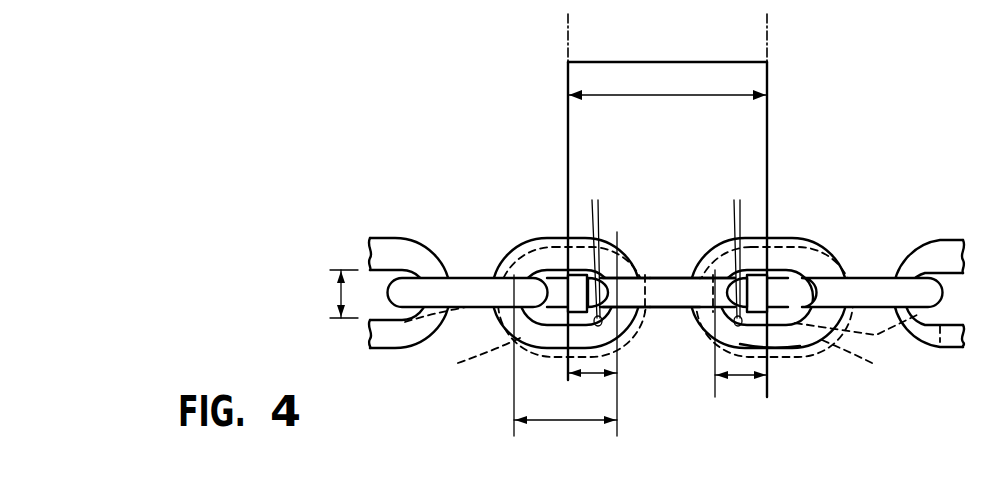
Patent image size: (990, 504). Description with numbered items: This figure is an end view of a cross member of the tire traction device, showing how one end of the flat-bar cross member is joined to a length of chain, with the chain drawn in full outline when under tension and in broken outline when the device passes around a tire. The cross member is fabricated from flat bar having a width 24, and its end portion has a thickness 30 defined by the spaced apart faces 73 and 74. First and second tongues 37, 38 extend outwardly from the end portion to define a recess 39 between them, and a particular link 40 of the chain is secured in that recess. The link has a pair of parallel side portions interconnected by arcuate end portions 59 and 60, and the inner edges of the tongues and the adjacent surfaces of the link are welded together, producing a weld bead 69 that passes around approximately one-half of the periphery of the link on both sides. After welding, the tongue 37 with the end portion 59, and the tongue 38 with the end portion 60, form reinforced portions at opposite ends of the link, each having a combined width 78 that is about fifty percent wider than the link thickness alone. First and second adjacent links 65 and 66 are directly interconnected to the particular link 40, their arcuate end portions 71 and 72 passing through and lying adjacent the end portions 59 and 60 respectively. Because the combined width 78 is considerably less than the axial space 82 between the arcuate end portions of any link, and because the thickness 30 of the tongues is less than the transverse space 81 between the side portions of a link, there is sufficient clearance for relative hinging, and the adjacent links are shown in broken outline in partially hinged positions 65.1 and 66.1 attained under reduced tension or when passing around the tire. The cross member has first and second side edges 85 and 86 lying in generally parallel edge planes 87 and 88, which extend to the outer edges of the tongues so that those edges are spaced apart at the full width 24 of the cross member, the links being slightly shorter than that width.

The width 24 is at (676, 96).
The thickness 30 is at (688, 277).
The first tongue 37 is at (783, 276).
The second tongue 38 is at (550, 284).
The recess 39 is at (812, 351).
The particular link 40 is at (630, 322).
The first arcuate end portion 59 is at (772, 287).
The second arcuate end portion 60 is at (627, 273).
The first adjacent link 65 is at (828, 246).
The partially hinged position of first adjacent link 65.1 is at (879, 311).
The second adjacent link 66 is at (490, 249).
The partially hinged position of second adjacent link 66.1 is at (456, 365).
The weld bead 69 is at (667, 263).
The arcuate end portion of first adjacent link 71 is at (708, 264).
The arcuate end portion of second adjacent link 72 is at (645, 262).
The first face 73 is at (672, 262).
The second face 74 is at (658, 322).
The combined width 78 is at (583, 378).
The transverse space 81 is at (328, 295).
The axial space 82 is at (570, 428).
The first side edge 85 is at (769, 74).
The second side edge 86 is at (567, 74).
The first edge plane 87 is at (769, 31).
The second edge plane 88 is at (567, 31).